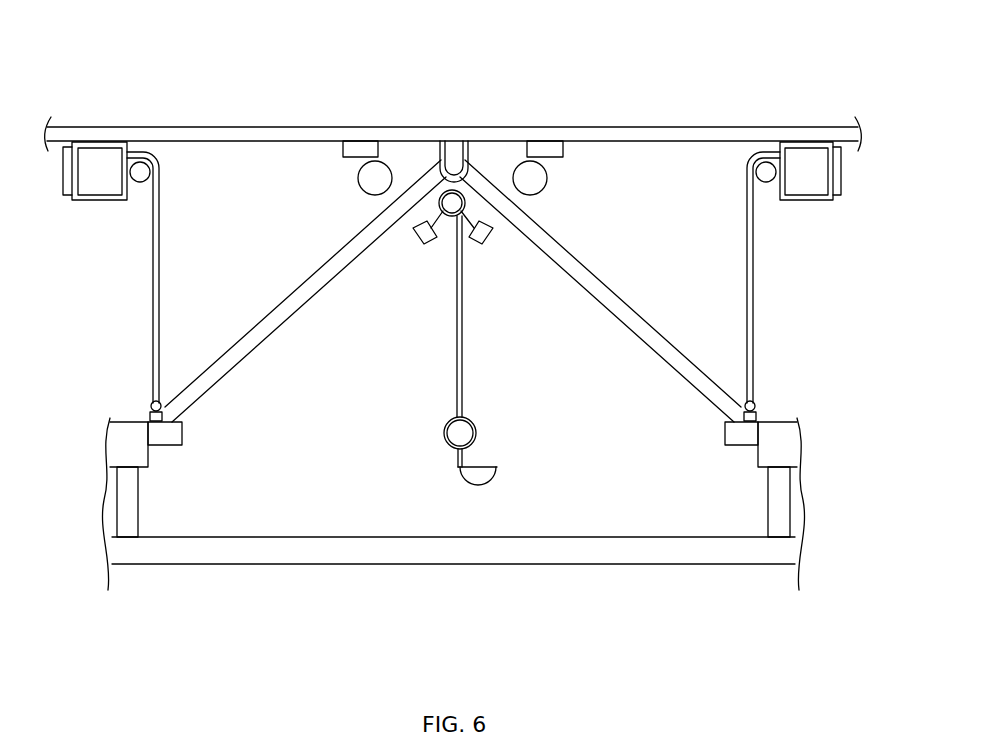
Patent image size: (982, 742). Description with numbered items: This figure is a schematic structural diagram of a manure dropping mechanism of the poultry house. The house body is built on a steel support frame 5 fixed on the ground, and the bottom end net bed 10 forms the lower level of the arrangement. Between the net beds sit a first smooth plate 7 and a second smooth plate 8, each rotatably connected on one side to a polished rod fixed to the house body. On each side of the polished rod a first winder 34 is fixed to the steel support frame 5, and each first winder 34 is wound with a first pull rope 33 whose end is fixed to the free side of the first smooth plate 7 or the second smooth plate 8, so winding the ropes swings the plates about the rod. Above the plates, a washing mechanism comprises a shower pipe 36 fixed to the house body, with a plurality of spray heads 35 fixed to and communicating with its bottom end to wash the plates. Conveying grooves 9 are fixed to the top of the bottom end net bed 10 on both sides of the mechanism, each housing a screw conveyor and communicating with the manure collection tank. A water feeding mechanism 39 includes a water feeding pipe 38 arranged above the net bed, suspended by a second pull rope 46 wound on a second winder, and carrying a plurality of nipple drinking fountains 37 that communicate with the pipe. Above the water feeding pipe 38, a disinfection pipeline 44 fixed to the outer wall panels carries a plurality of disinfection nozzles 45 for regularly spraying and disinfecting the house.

The steel support frame 5 is at (196, 135).
The first smooth plate 7 is at (622, 318).
The second smooth plate 8 is at (287, 317).
The conveying groove 9 is at (786, 440).
The bottom end net bed 10 is at (243, 552).
The first pull rope 33 is at (813, 312).
The first winder 34 is at (807, 183).
The spray head 35 is at (527, 183).
The shower pipe 36 is at (362, 153).
The nipple drinking fountain 37 is at (480, 478).
The water feeding pipe 38 is at (470, 442).
The water feeding mechanism 39 is at (547, 545).
The disinfection pipeline 44 is at (443, 188).
The disinfection nozzle 45 is at (487, 233).
The second pull rope 46 is at (460, 330).